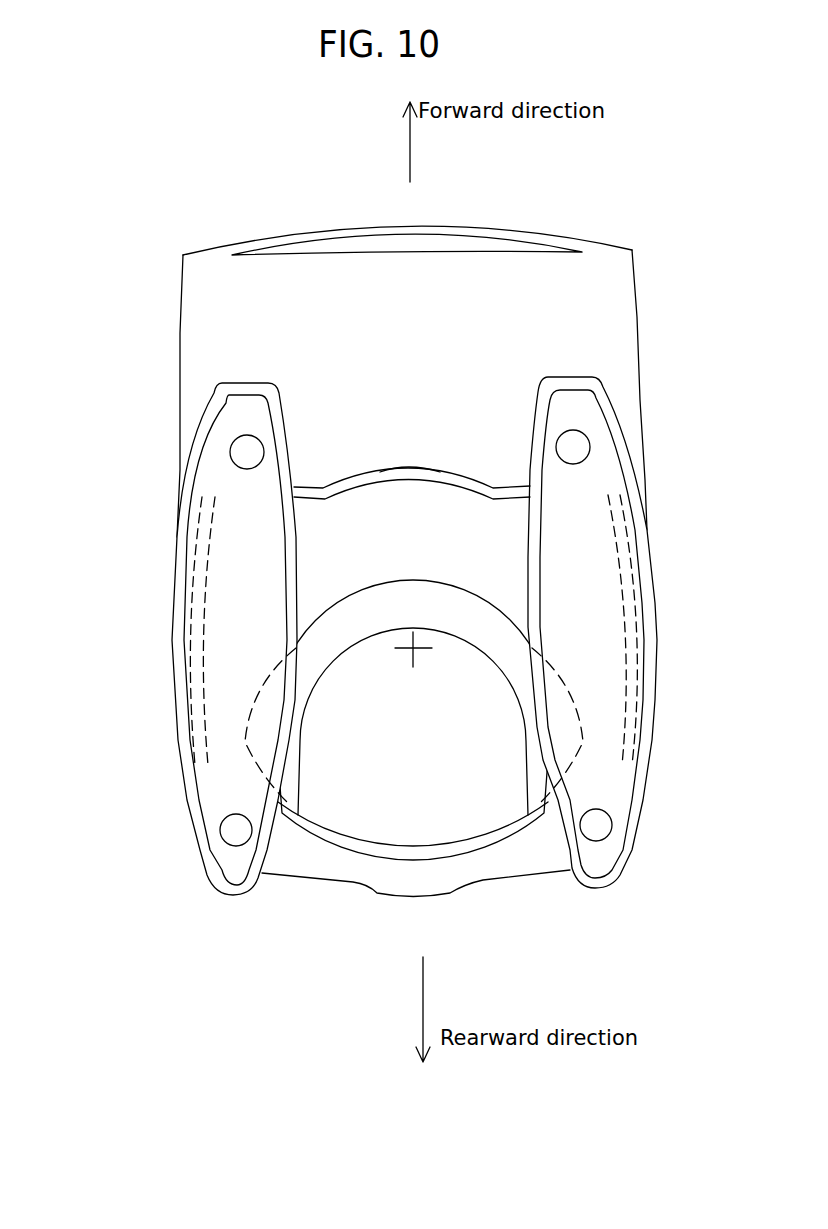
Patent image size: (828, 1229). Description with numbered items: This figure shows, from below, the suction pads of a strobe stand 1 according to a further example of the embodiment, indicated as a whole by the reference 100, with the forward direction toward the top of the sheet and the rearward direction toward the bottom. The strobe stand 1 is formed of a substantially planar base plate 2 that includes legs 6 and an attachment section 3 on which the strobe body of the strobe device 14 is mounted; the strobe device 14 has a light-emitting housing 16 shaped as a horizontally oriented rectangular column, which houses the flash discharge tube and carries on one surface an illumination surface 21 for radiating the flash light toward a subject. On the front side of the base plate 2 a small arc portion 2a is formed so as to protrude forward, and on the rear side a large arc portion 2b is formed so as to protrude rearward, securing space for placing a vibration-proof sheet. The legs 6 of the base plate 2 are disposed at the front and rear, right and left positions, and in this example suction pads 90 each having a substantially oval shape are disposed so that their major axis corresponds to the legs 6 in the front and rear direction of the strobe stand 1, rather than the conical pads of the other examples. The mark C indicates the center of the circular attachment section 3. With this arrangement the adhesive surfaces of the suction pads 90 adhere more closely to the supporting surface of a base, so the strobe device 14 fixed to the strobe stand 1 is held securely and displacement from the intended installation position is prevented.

The device 100 is at (114, 147).
The strobe stand 1 is at (530, 855).
The base plate 2 is at (375, 473).
The small arc portion 2a is at (413, 477).
The large arc portion 2b is at (475, 852).
The attachment section 3 is at (412, 818).
The legs 6 is at (192, 578).
The strobe device 14 is at (615, 318).
The light-emitting housing 16 is at (179, 340).
The illumination surface 21 is at (455, 245).
The suction pads 90 is at (185, 625).
The center C is at (412, 652).